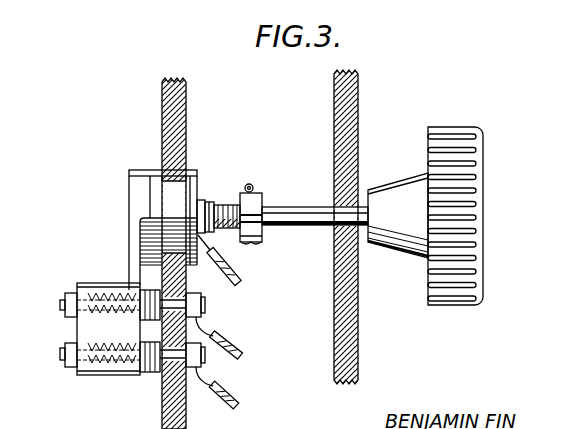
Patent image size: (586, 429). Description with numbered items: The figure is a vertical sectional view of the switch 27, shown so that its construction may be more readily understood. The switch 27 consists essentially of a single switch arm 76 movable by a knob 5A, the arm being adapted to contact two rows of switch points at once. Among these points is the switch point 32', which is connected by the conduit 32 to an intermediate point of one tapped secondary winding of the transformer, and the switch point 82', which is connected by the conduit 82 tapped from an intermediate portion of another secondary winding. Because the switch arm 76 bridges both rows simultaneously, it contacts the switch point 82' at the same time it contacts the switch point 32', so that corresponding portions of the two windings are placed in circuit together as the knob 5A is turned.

The switch 27 is at (128, 167).
The knob 5A is at (483, 172).
The switch arm 76 is at (129, 273).
The switch point 32' is at (206, 304).
The conduit 32 is at (234, 338).
The switch point 82' is at (216, 366).
The conduit 82 is at (234, 394).